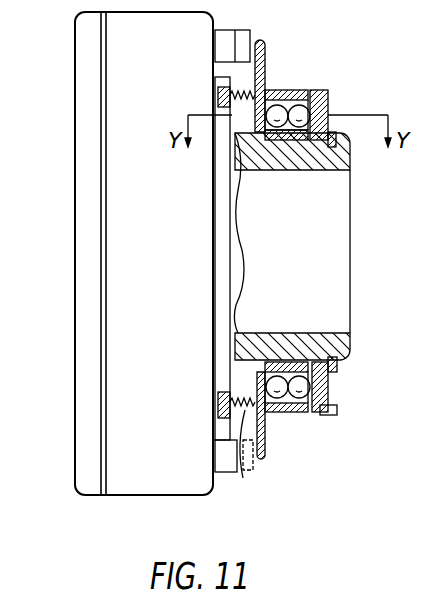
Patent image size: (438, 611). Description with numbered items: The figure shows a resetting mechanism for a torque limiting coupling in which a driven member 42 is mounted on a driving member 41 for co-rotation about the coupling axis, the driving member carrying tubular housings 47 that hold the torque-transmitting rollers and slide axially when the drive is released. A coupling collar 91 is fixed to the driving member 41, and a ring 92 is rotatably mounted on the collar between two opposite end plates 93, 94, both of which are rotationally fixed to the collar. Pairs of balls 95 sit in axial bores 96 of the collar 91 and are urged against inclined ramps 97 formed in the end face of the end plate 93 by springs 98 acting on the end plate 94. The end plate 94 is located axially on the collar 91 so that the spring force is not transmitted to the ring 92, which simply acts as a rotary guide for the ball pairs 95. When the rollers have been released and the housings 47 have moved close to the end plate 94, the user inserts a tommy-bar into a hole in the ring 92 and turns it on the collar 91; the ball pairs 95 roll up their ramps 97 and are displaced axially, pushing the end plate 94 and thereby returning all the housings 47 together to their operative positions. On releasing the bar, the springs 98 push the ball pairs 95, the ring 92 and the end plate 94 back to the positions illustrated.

The driving member 41 is at (137, 23).
The driven member 42 is at (88, 95).
The tubular housing 47 is at (233, 32).
The coupling collar 91 is at (345, 156).
The ring 92 is at (277, 88).
The end plate 93 is at (327, 92).
The end plate 94 is at (265, 57).
The pairs of balls 95 is at (300, 136).
The axial bores 96 is at (262, 385).
The inclined ramps 97 is at (300, 410).
The springs 98 is at (240, 473).